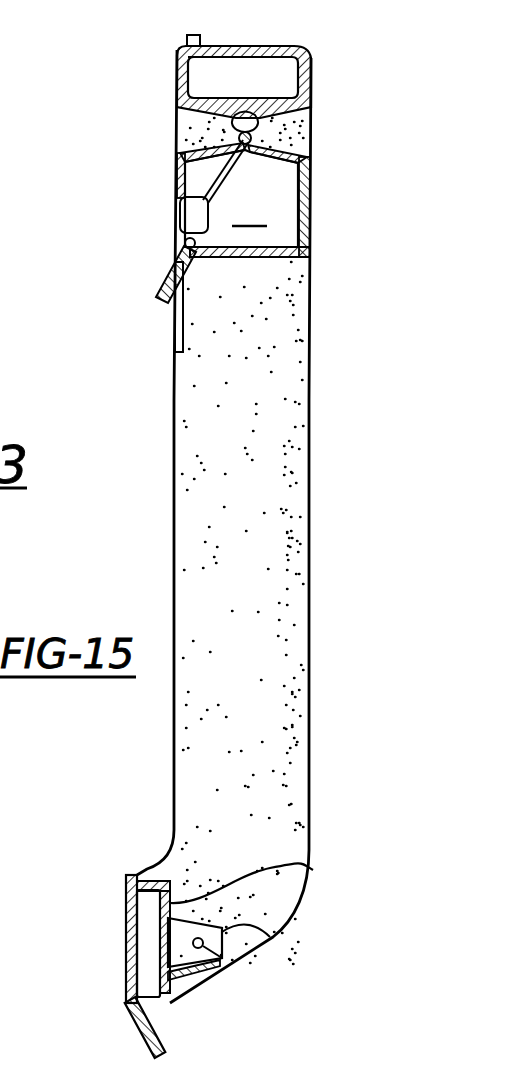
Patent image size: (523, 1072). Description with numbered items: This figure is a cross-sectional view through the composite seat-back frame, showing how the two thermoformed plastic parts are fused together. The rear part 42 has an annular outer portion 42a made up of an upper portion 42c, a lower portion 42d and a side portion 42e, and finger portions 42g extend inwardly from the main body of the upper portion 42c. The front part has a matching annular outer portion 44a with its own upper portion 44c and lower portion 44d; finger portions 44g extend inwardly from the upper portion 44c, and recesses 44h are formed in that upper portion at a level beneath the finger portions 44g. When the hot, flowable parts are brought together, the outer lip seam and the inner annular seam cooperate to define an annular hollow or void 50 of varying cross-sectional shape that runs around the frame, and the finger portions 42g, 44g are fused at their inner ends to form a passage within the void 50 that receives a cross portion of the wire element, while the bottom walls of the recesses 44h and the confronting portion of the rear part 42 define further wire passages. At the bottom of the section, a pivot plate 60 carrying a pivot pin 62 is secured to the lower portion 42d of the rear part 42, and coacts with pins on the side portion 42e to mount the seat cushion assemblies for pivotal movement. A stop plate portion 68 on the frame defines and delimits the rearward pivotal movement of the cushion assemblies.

The rear part 42 is at (332, 166).
The annular outer portion 42a is at (327, 233).
The upper portion 42c is at (312, 103).
The lower portion 42d is at (313, 870).
The side portion 42e is at (290, 612).
The finger portions 42g is at (312, 128).
The annular outer portion 44a is at (168, 180).
The upper portion 44c is at (177, 73).
The lower portion 44d is at (125, 937).
The finger portions 44g is at (178, 120).
The recesses 44h is at (177, 217).
The annular hollow or void 50 is at (130, 955).
The pivot plate 60 is at (270, 937).
The pivot pin 62 is at (220, 970).
The stop plate portions 68 is at (183, 323).